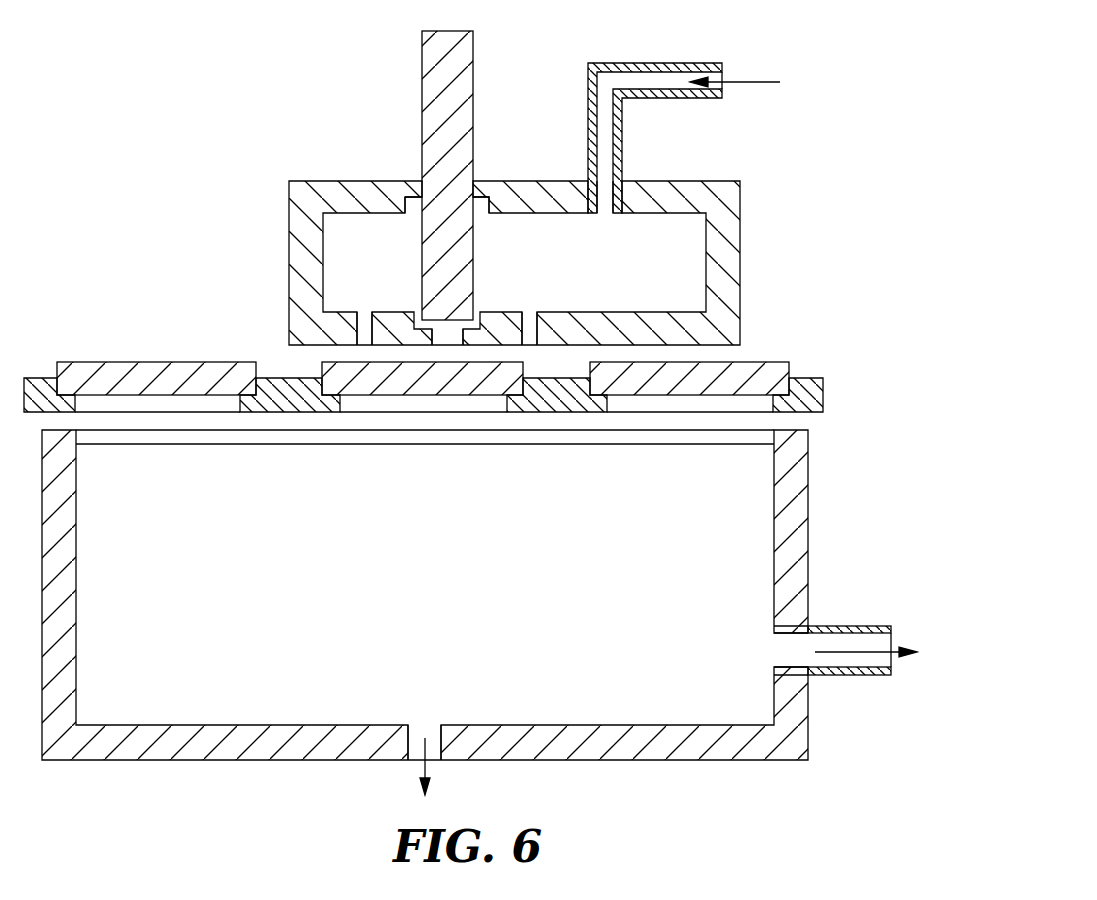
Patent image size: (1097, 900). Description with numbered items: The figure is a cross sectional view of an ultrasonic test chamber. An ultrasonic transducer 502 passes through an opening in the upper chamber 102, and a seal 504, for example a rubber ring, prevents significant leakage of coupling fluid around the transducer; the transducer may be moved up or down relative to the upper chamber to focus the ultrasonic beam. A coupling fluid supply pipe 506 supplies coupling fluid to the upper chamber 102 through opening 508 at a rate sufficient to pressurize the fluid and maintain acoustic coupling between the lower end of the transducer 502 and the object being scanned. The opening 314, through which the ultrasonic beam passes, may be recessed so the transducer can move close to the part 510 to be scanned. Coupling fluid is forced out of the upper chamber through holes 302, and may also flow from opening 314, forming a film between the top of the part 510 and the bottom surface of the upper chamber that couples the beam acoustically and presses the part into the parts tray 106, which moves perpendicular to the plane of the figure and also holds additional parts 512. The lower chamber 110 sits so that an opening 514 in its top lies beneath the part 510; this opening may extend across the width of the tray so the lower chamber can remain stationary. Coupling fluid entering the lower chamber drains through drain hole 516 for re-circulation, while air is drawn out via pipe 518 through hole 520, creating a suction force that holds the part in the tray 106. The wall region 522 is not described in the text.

The upper chamber 102 is at (289, 248).
The parts tray 106 is at (813, 413).
The lower chamber 110 is at (157, 760).
The holes 302 is at (362, 313).
The opening 314 is at (477, 318).
The ultrasonic transducer 502 is at (421, 57).
The seal 504 is at (415, 206).
The coupling fluid supply pipe 506 is at (637, 63).
The opening 508 is at (605, 207).
The part to be scanned 510 is at (323, 365).
The additional parts 512 is at (165, 363).
The opening 514 is at (338, 435).
The drain hole 516 is at (423, 732).
The pipe 518 is at (838, 626).
The hole 520 is at (783, 650).
The side wall 522 is at (758, 517).